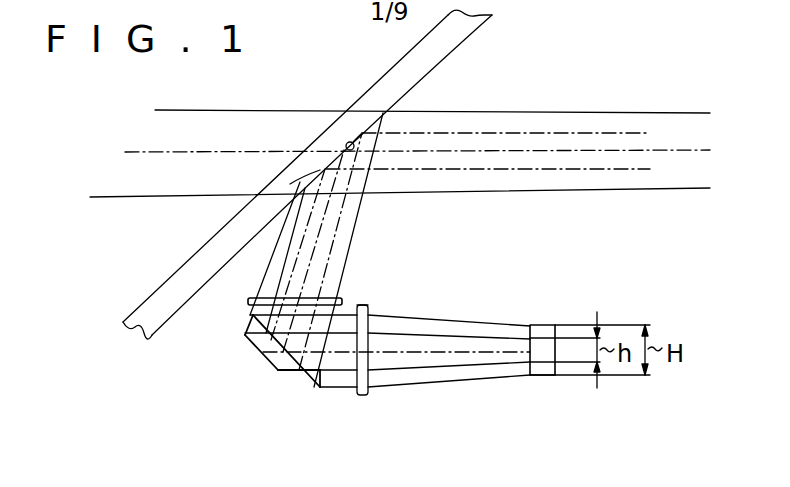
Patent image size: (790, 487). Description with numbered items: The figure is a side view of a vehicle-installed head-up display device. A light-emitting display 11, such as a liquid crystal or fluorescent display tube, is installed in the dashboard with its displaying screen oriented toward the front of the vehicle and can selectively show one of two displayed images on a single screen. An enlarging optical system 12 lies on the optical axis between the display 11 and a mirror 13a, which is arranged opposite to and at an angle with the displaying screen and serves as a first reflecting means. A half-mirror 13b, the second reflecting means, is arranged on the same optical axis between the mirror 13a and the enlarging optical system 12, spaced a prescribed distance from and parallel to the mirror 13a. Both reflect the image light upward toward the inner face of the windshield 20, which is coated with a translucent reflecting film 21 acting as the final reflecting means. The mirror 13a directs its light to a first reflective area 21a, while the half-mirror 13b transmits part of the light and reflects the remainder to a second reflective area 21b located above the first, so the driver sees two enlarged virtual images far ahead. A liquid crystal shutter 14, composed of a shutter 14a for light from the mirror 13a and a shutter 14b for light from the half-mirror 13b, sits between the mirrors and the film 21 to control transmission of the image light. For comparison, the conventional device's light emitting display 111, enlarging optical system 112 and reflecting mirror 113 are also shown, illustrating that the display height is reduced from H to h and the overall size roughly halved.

The light-emitting display 11 is at (547, 325).
The light emitting display 111 is at (547, 377).
The enlarging optical system 112 is at (363, 306).
The reflecting mirror 113 is at (319, 388).
The enlarging optical system 12 is at (366, 363).
The mirror 13a is at (269, 363).
The half-mirror 13b is at (308, 373).
The liquid crystal shutter 14 is at (239, 388).
The shutter 14a is at (248, 299).
The shutter 14b is at (256, 349).
The windshield 20 is at (381, 88).
The translucent reflecting film 21 is at (343, 147).
The first reflective area 21a is at (300, 181).
The second reflective area 21b is at (357, 138).